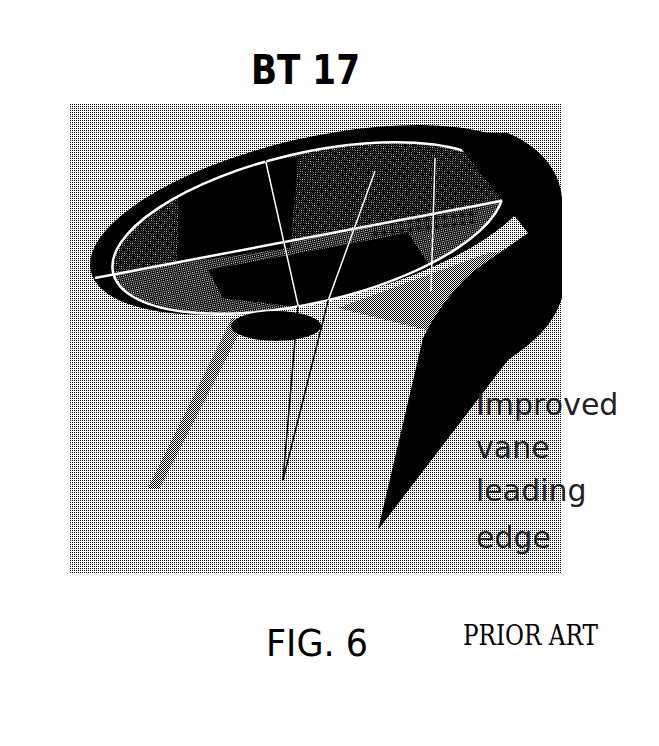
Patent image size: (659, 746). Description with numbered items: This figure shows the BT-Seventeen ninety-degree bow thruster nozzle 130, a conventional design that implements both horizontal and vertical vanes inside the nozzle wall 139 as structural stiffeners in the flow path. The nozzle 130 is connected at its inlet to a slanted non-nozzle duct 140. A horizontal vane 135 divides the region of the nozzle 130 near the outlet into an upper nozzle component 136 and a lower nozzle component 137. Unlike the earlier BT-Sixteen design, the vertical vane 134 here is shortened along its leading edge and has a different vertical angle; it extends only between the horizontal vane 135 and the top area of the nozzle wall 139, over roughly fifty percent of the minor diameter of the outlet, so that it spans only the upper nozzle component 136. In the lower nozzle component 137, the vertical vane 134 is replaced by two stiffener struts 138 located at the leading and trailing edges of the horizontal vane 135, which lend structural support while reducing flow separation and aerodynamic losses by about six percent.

The bow thruster nozzle 130 is at (545, 164).
The vertical vane 134 is at (255, 158).
The horizontal vane 135 is at (432, 172).
The upper nozzle component 136 is at (140, 197).
The lower nozzle component 137 is at (122, 304).
The stiffener struts 138 is at (300, 350).
The nozzle wall 139 is at (413, 130).
The slanted non-nozzle duct 140 is at (233, 407).